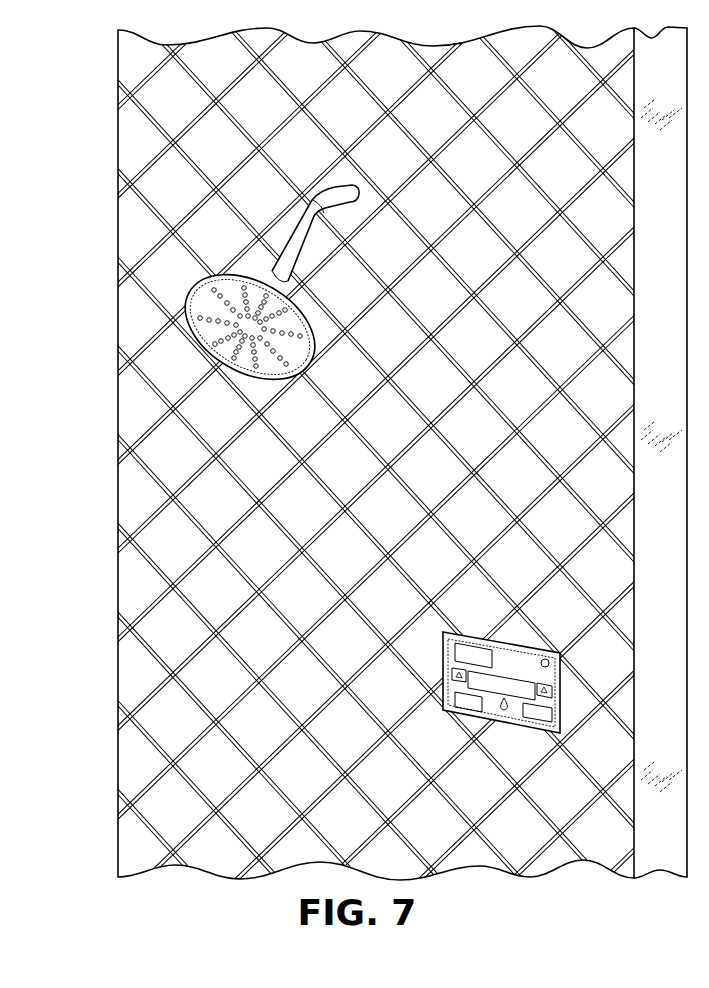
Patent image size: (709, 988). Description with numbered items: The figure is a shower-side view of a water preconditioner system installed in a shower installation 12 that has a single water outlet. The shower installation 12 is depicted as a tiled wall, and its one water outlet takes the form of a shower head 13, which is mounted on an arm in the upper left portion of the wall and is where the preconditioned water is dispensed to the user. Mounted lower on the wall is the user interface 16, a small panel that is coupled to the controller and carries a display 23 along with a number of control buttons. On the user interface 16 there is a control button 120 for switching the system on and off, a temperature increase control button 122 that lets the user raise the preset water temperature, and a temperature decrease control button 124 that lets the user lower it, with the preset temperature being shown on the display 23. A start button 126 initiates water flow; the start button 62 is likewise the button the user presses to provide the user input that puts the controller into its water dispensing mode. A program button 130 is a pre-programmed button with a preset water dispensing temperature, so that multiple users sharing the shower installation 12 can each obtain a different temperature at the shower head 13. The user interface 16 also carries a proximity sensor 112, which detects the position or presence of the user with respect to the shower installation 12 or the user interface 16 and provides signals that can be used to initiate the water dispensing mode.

The shower installation 12 is at (92, 279).
The shower head 13 is at (210, 288).
The user interface 16 is at (522, 652).
The display 23 is at (508, 668).
The start button 62 is at (462, 708).
The proximity sensor 112 is at (552, 664).
The control button 120 is at (553, 722).
The temperature increase control button 122 is at (553, 686).
The temperature decrease control button 124 is at (453, 676).
The start button 126 is at (503, 712).
The program button 130 is at (458, 650).